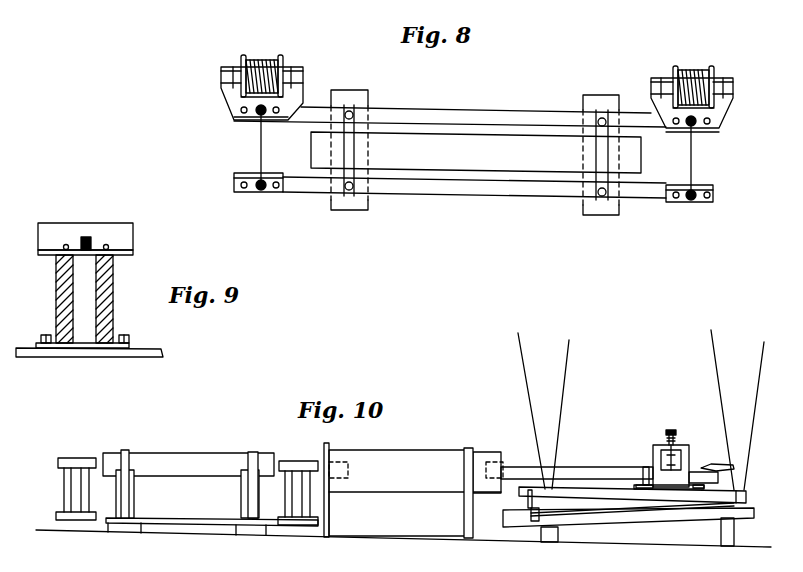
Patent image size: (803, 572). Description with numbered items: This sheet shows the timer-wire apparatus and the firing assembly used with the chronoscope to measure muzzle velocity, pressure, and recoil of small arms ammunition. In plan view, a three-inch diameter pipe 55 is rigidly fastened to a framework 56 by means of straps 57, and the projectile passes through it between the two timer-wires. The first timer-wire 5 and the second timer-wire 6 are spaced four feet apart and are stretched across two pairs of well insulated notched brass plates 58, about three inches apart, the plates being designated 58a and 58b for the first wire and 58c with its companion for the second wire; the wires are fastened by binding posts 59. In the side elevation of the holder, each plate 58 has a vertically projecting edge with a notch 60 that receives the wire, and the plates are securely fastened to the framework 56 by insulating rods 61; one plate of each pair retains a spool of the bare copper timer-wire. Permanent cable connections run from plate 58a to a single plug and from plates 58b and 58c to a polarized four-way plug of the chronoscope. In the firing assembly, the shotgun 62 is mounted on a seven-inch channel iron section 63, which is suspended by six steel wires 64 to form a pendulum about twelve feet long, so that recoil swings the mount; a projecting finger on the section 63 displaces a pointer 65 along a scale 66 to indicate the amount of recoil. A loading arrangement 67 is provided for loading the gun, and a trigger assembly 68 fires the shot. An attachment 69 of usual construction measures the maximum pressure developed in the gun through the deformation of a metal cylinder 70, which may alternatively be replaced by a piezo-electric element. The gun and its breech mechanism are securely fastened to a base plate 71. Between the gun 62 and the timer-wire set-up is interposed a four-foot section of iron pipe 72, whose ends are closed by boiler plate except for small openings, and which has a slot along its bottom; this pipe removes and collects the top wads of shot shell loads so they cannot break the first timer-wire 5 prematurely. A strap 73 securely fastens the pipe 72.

In FIG. 8, the timer-wire 5 is at (698, 158).
In FIG. 8, the timer-wire 6 is at (250, 147).
In FIG. 8, the pipe 55 is at (470, 158).
In FIG. 10, the pipe 55 is at (198, 437).
In FIG. 8, the framework 56 is at (566, 194).
In FIG. 9, the framework 56 is at (140, 352).
In FIG. 8, the straps 57 is at (372, 77).
In FIG. 10, the straps 57 is at (140, 436).
In FIG. 9, the plates 58 is at (133, 245).
In FIG. 10, the plates 58 is at (82, 443).
In FIG. 8, the brass plate 58a is at (221, 89).
In FIG. 8, the brass plate 58b is at (732, 103).
In FIG. 8, the brass plate 58c is at (233, 185).
In FIG. 8, the binding posts 59 is at (263, 115).
In FIG. 9, the notch 60 is at (83, 236).
In FIG. 9, the insulating rods 61 is at (92, 329).
In FIG. 10, the insulating rods 61 is at (85, 480).
In FIG. 10, the shotgun 62 is at (604, 468).
In FIG. 10, the channel iron section 63 is at (746, 497).
In FIG. 10, the steel wires 64 is at (565, 355).
In FIG. 10, the pointer 65 is at (533, 523).
In FIG. 10, the scale 66 is at (670, 520).
In FIG. 10, the loading arrangement 67 is at (720, 483).
In FIG. 10, the trigger assembly 68 is at (721, 470).
In FIG. 10, the pressure attachment 69 is at (654, 445).
In FIG. 10, the metal cylinder 70 is at (673, 460).
In FIG. 10, the base plate 71 is at (643, 468).
In FIG. 10, the iron pipe 72 is at (382, 456).
In FIG. 10, the strap 73 is at (467, 448).